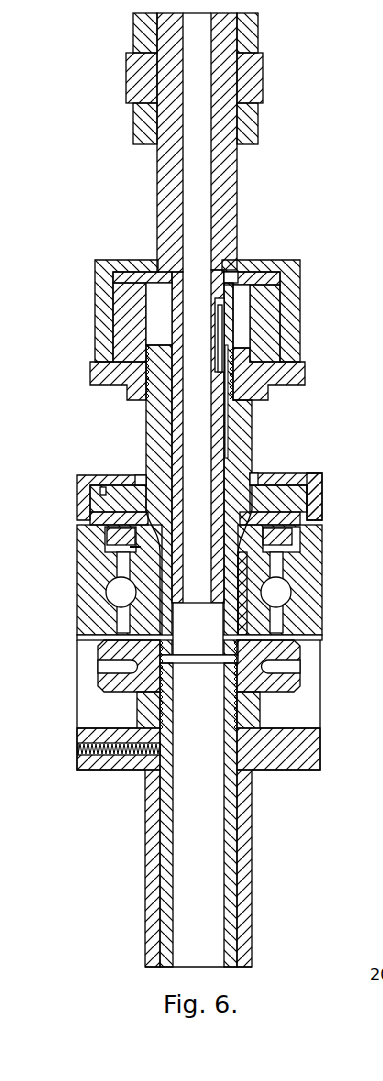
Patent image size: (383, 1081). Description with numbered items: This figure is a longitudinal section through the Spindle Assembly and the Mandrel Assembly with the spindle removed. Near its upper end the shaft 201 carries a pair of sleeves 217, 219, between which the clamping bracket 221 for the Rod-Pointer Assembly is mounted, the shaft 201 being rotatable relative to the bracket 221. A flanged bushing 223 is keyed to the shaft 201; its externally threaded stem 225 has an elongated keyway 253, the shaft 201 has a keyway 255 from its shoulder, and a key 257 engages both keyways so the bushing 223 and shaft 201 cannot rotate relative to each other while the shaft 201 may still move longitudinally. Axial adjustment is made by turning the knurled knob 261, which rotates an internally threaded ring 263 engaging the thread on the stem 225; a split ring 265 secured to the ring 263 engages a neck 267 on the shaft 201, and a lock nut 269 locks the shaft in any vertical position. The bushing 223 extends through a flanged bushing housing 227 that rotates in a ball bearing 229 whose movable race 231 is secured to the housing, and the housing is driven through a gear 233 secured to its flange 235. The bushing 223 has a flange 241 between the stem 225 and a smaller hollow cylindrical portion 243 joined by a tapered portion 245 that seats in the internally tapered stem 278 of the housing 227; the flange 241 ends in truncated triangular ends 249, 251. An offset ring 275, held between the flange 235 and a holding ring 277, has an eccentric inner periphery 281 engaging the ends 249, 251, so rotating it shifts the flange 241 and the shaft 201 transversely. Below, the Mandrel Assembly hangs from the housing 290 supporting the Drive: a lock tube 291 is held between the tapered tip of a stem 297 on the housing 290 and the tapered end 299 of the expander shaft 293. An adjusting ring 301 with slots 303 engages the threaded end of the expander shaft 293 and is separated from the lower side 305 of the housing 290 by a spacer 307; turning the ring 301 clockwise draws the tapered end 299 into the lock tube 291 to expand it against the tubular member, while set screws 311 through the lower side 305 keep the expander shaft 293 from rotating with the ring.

The shaft 201 is at (228, 173).
The sleeve 217 is at (250, 33).
The sleeve 219 is at (253, 125).
The clamping bracket 221 is at (258, 80).
The flanged bushing 223 is at (305, 537).
The stem 225 is at (240, 434).
The flanged bushing housing 227 is at (255, 539).
The ball bearing 229 is at (277, 620).
The movable race 231 is at (264, 574).
The gear 233 is at (113, 533).
The flange 235 is at (303, 518).
The flange 241 is at (96, 539).
The hollow cylindrical portion 243 is at (197, 615).
The tapered portion 245 is at (137, 548).
The truncated triangular end 249 is at (105, 498).
The truncated triangular end 251 is at (264, 495).
The keyway 253 is at (228, 413).
The keyway 255 is at (217, 317).
The key 257 is at (225, 329).
The knurled knob 261 is at (103, 270).
The internally threaded ring 263 is at (127, 295).
The split ring 265 is at (137, 276).
The neck 267 is at (233, 277).
The lock nut 269 is at (100, 377).
The offset ring 275 is at (315, 493).
The holding ring 277 is at (134, 478).
The stem 278 is at (241, 564).
The eccentric inner periphery 281 is at (100, 496).
The housing 290 is at (201, 804).
The lock tube 291 is at (250, 967).
The expander shaft 293 is at (160, 848).
The stem 297 is at (245, 795).
The tapered end 299 is at (148, 967).
The adjusting ring 301 is at (105, 680).
The slots 303 is at (105, 666).
The lower side 305 is at (318, 752).
The spacer 307 is at (143, 708).
The set screws 311 is at (113, 756).